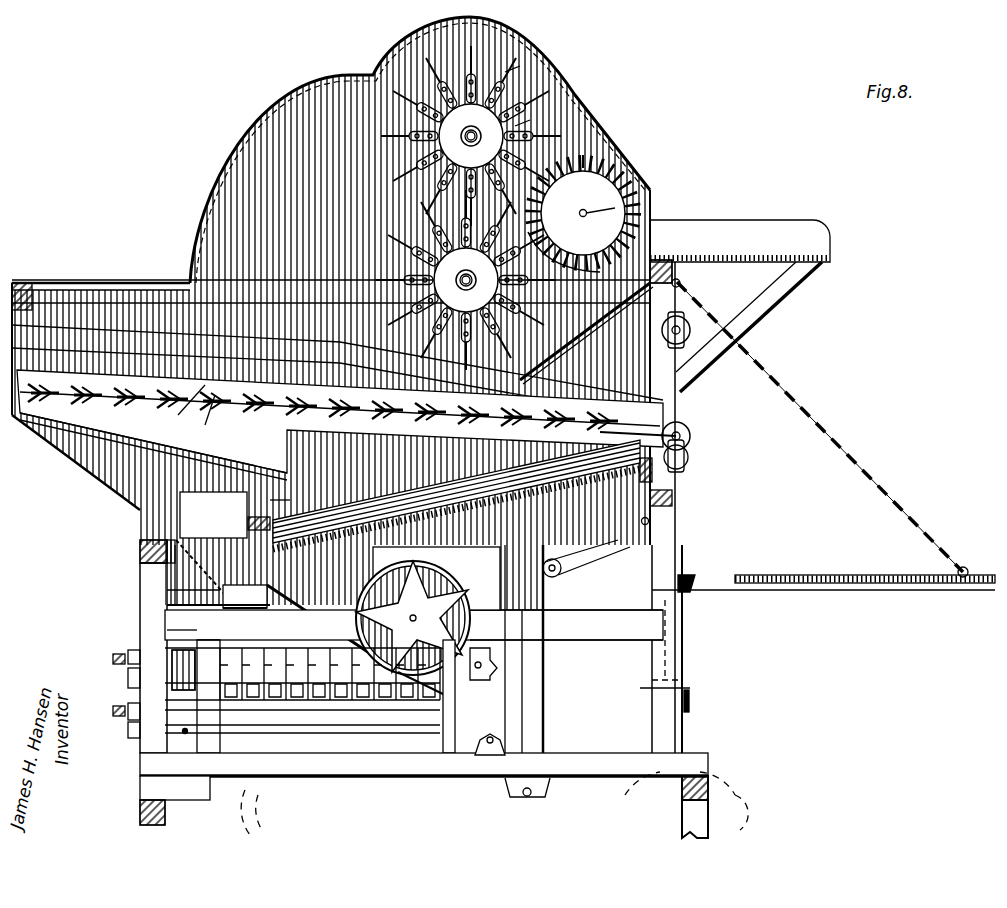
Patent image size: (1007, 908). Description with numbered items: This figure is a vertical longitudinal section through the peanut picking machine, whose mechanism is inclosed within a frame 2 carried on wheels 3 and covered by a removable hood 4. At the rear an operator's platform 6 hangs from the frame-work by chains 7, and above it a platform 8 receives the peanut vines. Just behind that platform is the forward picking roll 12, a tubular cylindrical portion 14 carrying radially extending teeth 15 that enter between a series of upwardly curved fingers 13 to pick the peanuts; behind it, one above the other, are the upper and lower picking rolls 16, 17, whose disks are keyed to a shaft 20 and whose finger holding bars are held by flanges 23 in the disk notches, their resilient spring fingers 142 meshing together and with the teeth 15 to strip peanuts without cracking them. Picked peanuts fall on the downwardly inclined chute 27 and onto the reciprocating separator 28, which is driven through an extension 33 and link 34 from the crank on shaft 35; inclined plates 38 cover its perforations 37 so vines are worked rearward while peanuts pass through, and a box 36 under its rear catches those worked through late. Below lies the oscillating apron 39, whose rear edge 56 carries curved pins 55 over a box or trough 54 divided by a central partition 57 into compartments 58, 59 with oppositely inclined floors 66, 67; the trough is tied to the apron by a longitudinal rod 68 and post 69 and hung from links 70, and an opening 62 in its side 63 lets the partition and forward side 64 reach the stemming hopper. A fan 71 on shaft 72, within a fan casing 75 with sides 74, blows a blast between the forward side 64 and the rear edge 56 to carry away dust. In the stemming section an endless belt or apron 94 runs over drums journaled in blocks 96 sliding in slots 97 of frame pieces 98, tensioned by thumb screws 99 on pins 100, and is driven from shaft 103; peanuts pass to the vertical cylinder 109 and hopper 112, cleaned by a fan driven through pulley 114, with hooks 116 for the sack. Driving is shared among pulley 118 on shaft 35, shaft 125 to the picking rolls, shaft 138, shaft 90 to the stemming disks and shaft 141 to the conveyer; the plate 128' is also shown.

The frame 2 is at (677, 652).
The wheels 3 is at (262, 822).
The removable hood 4 is at (548, 62).
The platform for the operator 6 is at (858, 576).
The chains 7 is at (866, 482).
The platform 8 is at (777, 255).
The picking roll 12 is at (614, 208).
The upwardly curved fingers 13 is at (655, 256).
The tubular cylindrical portion 14 is at (580, 217).
The radially extending teeth or fingers 15 is at (578, 158).
The upper picking roll 16 is at (522, 124).
The lower picking roll 17 is at (464, 293).
The shaft 20 is at (471, 136).
The flanges 23 is at (471, 142).
The downwardly inclined chute 27 is at (716, 293).
The reciprocating separator 28 is at (250, 398).
The extension 33 is at (680, 396).
The link 34 is at (682, 428).
The shaft 35 is at (692, 438).
The box 36 is at (75, 408).
The perforations 37 is at (180, 407).
The plates 38 is at (200, 418).
The oscillating apron 39 is at (672, 499).
The box or trough 54 is at (140, 551).
The curved fingers or pins 55 is at (240, 555).
The rear edge 56 is at (278, 550).
The central partition 57 is at (213, 573).
The compartment 58 is at (185, 592).
The compartment 59 is at (260, 612).
The opening 62 is at (236, 620).
The side 63 is at (193, 550).
The forward side 64 is at (263, 614).
The bottom or floor 66 is at (180, 620).
The bottom or floor 67 is at (217, 618).
The longitudinal rod 68 is at (246, 513).
The post 69 is at (282, 506).
The links 70 is at (200, 487).
The fan 71 is at (455, 577).
The shaft 72 is at (413, 618).
The sides 74 is at (462, 628).
The fan casing 75 is at (443, 670).
The shaft 90 is at (495, 672).
The endless belt or apron 94 is at (170, 682).
The blocks or slides 96 is at (187, 735).
The slots 97 is at (140, 736).
The frame pieces 98 is at (140, 680).
The thumb screws 99 is at (126, 722).
The pins 100 is at (112, 712).
The shaft 103 is at (486, 746).
The vertical cylinder 109 is at (530, 737).
The hopper 112 is at (692, 582).
The driving pulley 114 is at (517, 573).
The hooks 116 is at (690, 708).
The pulley 118 is at (692, 458).
The shaft 125 is at (692, 333).
The plate 128' is at (682, 222).
The shaft 138 is at (650, 521).
The shaft 141 is at (536, 796).
The spring fingers 142 is at (512, 72).